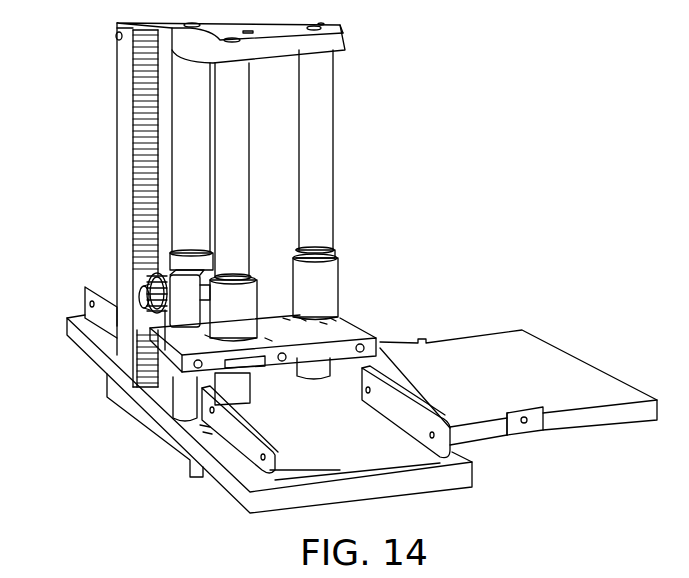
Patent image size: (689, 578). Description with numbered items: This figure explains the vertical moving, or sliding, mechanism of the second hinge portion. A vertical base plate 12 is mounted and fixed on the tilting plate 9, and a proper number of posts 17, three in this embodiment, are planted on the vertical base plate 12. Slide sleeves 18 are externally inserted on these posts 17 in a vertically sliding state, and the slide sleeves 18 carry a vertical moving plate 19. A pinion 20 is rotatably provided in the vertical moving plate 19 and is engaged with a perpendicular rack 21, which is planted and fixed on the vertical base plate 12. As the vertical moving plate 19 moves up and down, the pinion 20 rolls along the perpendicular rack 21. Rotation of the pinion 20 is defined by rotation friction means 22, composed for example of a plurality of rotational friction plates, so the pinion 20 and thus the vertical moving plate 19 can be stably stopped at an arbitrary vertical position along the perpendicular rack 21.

The tilting plate 9 is at (560, 360).
The vertical base plate 12 is at (78, 337).
The posts 17 is at (312, 138).
The slide sleeves 18 is at (318, 283).
The vertical moving plate 19 is at (352, 333).
The pinion 20 is at (140, 327).
The perpendicular rack 21 is at (135, 108).
The rotation friction means 22 is at (140, 280).